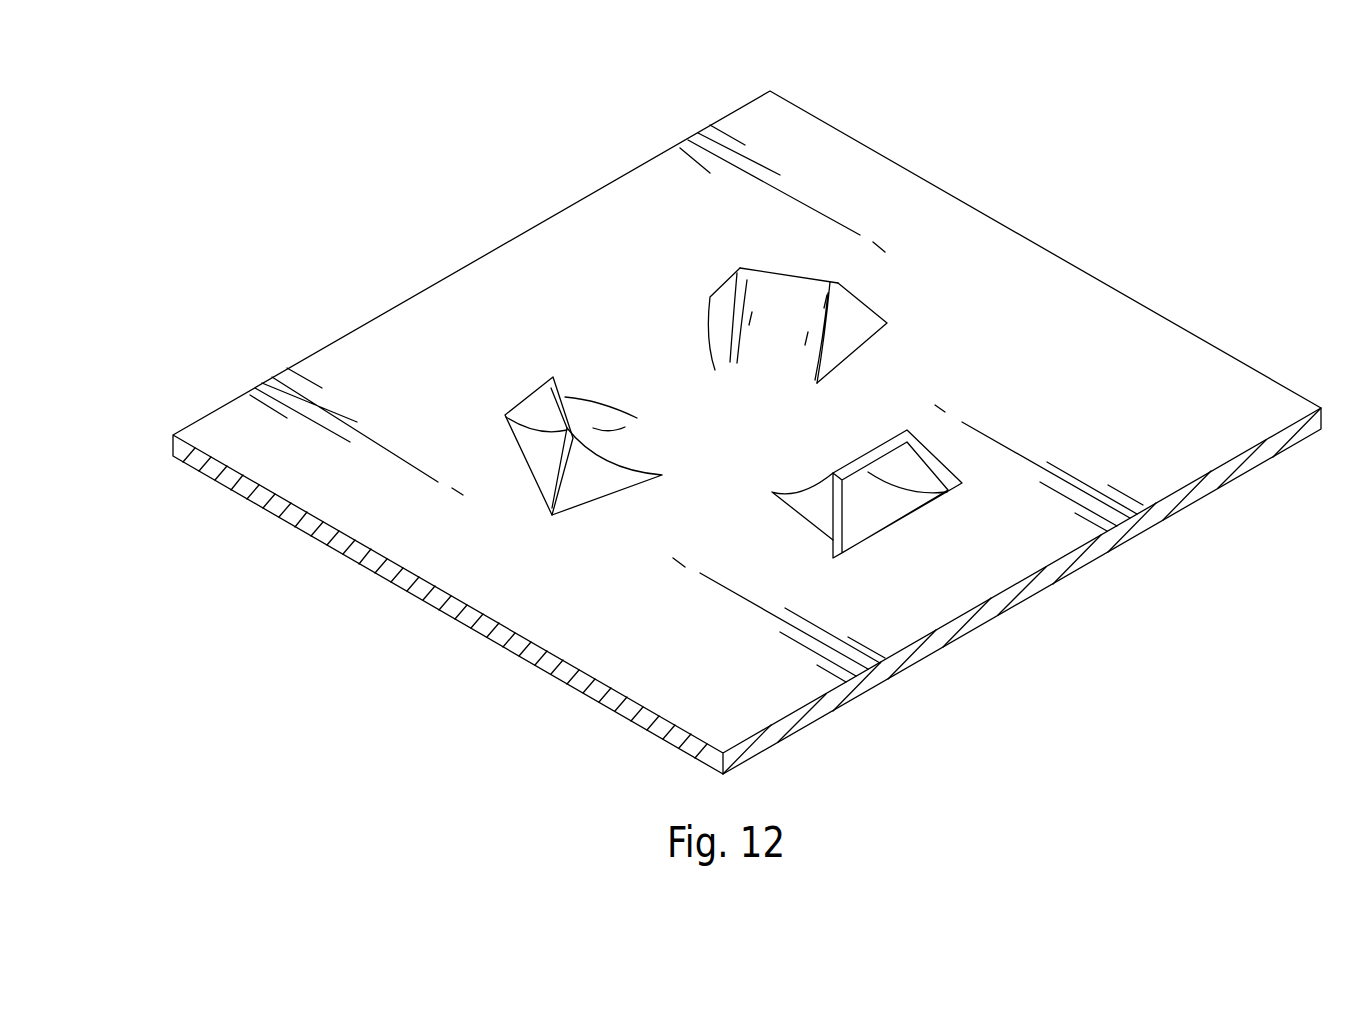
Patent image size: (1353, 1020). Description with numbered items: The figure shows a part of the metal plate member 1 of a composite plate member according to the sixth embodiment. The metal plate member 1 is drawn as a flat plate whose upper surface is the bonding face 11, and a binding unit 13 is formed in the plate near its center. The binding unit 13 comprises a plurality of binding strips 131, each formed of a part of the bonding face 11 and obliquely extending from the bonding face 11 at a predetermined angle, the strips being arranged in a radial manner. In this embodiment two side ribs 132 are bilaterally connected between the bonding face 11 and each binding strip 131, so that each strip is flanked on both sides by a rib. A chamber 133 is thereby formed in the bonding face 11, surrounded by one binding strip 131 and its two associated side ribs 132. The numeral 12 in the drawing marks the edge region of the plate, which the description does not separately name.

The metal plate member 1 is at (378, 663).
The bonding face 11 is at (213, 410).
The plate body side 12 is at (975, 636).
The binding unit 13 is at (718, 391).
The binding strip 131 is at (565, 410).
The side rib 132 is at (565, 473).
The chamber 133 is at (520, 465).